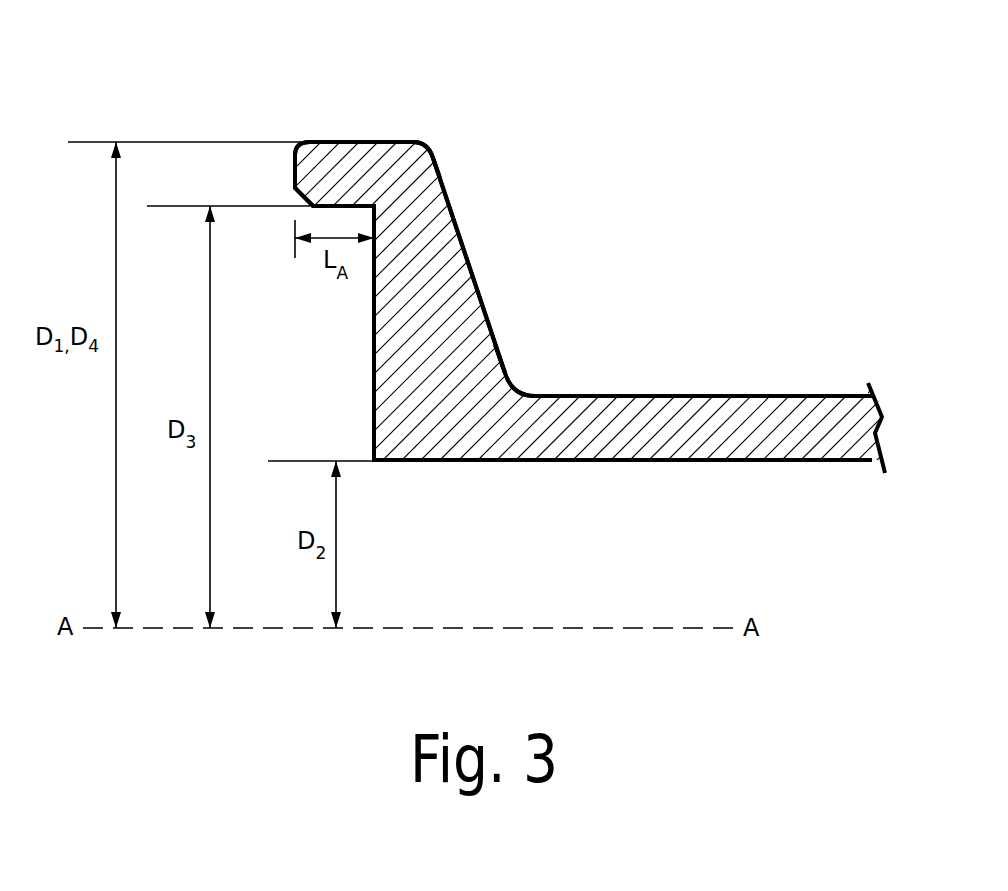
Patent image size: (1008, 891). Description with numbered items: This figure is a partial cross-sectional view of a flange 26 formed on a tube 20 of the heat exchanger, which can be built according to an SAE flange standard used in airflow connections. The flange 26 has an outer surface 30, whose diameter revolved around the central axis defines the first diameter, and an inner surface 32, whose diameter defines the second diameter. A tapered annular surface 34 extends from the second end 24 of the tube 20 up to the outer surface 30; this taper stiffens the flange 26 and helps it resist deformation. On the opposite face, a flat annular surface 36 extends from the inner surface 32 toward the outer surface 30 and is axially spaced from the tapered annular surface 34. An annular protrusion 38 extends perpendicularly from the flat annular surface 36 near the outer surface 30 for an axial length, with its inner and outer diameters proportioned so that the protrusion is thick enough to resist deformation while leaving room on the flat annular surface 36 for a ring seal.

The tube 20 is at (763, 432).
The second end 24 is at (523, 390).
The flange 26 is at (470, 388).
The outer surface 30 is at (338, 141).
The inner surface 32 is at (633, 460).
The tapered annular surface 34 is at (466, 262).
The flat annular surface 36 is at (372, 352).
The annular protrusion 38 is at (376, 173).